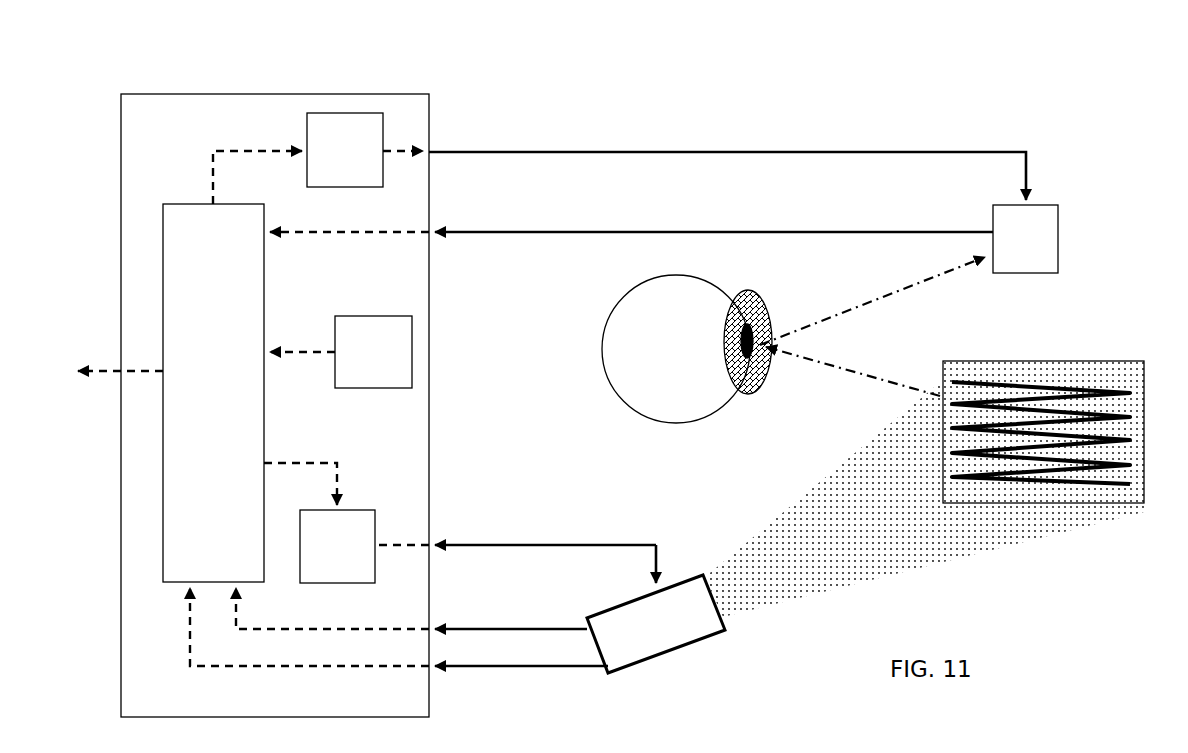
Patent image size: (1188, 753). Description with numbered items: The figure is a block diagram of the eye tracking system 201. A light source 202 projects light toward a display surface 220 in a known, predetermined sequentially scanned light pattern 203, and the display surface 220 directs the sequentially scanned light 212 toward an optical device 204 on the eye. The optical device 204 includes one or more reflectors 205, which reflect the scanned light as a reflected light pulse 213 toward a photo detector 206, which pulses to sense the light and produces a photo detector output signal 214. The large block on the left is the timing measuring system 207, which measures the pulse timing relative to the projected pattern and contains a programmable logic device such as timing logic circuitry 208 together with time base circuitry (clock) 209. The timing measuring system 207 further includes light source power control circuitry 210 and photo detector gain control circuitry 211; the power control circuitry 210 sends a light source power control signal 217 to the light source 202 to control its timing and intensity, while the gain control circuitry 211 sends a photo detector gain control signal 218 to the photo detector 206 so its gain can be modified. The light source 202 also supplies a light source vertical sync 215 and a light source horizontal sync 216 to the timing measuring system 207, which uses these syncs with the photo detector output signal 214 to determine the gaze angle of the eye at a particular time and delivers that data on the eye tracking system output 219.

The eye tracking system 201 is at (748, 105).
The light source 202 is at (660, 655).
The sequentially scanned light pattern 203 is at (1020, 483).
The optical device 204 is at (748, 295).
The reflector 205 is at (760, 322).
The photo detector 206 is at (1023, 273).
The timing measuring system 207 is at (429, 94).
The timing logic circuitry 208 is at (264, 290).
The time base circuitry (clock) 209 is at (412, 385).
The light source power control circuitry 210 is at (375, 510).
The photo detector gain control circuitry 211 is at (383, 187).
The sequentially scanned light 212 is at (883, 380).
The reflected light pulse 213 is at (878, 292).
The photo detector output signal 214 is at (690, 232).
The light source vertical sync 215 is at (475, 627).
The light source horizontal sync 216 is at (475, 668).
The light source power control signal 217 is at (540, 545).
The photo detector gain control signal 218 is at (893, 152).
The eye tracking system output 219 is at (140, 370).
The display surface 220 is at (955, 500).